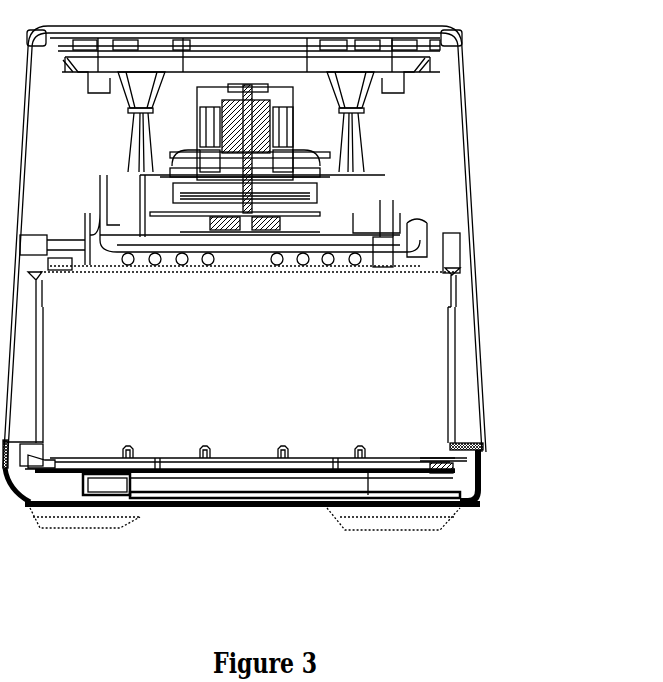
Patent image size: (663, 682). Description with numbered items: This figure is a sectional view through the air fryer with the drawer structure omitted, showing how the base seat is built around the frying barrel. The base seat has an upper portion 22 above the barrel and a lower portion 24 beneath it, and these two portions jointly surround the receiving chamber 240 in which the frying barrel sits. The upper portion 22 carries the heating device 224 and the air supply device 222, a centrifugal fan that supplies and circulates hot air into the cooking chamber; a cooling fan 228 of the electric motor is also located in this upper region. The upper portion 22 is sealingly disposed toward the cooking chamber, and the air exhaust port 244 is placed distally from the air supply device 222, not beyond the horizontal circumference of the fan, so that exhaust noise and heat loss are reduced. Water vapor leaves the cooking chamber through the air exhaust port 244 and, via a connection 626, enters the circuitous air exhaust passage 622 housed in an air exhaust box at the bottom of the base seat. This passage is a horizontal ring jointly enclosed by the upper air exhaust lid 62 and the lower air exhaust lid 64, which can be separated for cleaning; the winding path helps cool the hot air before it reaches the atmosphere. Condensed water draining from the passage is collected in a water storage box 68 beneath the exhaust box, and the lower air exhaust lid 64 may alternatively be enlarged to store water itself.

The upper portion 22 is at (375, 225).
The air supply device 222 is at (250, 237).
The cooling fan 228 is at (298, 192).
The heating device 224 is at (440, 250).
The lower portion 24 is at (321, 369).
The receiving chamber 240 is at (428, 390).
The air exhaust port 244 is at (462, 452).
The upper air exhaust lid 62 is at (293, 535).
The connection 626 is at (460, 460).
The lower air exhaust lid 64 is at (413, 497).
The water storage box 68 is at (362, 494).
The air exhaust passage 622 is at (107, 483).